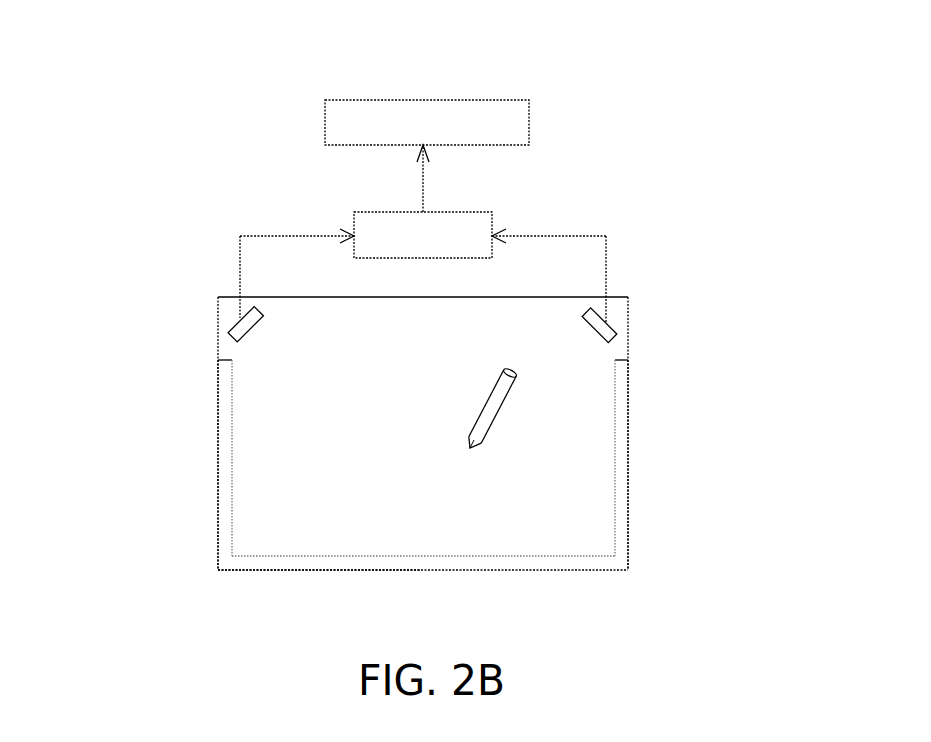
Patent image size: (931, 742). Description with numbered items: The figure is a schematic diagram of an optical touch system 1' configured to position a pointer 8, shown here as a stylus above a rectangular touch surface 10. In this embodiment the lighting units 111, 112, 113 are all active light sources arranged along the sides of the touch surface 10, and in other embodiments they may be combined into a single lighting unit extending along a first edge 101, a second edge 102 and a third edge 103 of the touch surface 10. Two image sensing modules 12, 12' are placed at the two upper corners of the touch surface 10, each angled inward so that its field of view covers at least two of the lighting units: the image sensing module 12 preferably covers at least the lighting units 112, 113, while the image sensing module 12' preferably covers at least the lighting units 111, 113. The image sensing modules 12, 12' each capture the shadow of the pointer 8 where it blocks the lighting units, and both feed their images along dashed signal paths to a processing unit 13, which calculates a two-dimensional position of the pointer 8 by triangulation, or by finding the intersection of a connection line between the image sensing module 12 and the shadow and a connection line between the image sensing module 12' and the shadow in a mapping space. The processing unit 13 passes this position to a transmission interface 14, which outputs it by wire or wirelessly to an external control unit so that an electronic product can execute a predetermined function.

The optical touch system 1' is at (750, 164).
The pointer 8 is at (488, 395).
The touch surface 10 is at (255, 448).
The image sensing module 12 is at (194, 289).
The image sensing module 12' is at (655, 289).
The processing unit 13 is at (492, 220).
The transmission interface 14 is at (481, 100).
The first edge 101 is at (218, 520).
The second edge 102 is at (628, 495).
The third edge 103 is at (263, 572).
The lighting unit 111 is at (223, 478).
The lighting unit 112 is at (623, 437).
The lighting unit 113 is at (563, 560).